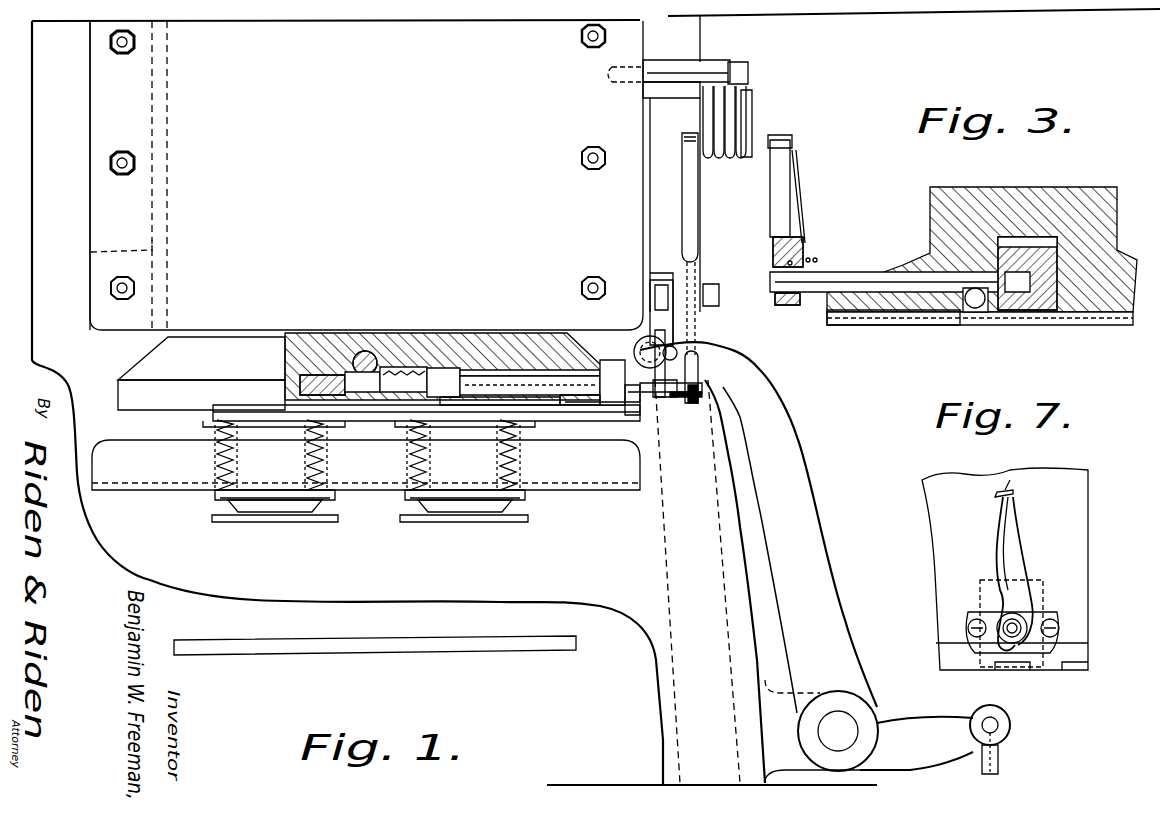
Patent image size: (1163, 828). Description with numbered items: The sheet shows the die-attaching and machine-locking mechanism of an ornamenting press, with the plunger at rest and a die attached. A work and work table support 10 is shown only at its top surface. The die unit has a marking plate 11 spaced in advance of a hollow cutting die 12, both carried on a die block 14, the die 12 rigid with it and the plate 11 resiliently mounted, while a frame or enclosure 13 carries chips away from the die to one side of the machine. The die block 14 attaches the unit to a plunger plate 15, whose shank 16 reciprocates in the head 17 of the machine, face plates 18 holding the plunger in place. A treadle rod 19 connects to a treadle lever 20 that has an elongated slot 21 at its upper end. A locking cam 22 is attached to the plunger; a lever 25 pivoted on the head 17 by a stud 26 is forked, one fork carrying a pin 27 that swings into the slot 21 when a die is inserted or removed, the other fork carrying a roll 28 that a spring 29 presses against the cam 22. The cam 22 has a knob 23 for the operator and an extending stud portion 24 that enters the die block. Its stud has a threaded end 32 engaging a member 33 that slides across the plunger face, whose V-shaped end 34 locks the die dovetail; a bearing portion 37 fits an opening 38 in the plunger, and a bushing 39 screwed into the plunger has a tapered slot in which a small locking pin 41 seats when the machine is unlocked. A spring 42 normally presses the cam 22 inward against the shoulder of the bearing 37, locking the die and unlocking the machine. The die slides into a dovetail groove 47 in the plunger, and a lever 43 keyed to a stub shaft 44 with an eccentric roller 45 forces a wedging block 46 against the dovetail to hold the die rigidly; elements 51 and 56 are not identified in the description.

In FIG. 1, the work and work table support 10 is at (448, 648).
In FIG. 1, the marking plate 11 is at (260, 523).
In FIG. 1, the cutting die 12 is at (228, 514).
In FIG. 1, the frame or enclosure 13 is at (183, 478).
In FIG. 1, the die block or base 14 is at (215, 416).
In FIG. 1, the plunger plate 15 is at (168, 362).
In FIG. 3, the plunger plate 15 is at (1095, 295).
In FIG. 7, the plunger plate 15 is at (1005, 569).
In FIG. 1, the shank 16 is at (98, 255).
In FIG. 1, the head 17 is at (50, 228).
In FIG. 1, the face plates 18 is at (95, 150).
In FIG. 1, the treadle rod 19 is at (1002, 752).
In FIG. 1, the treadle lever 20 is at (825, 578).
In FIG. 1, the elongated slot 21 is at (668, 352).
In FIG. 1, the locking lever or cam 22 is at (366, 176).
In FIG. 1, the knob or handle 23 is at (705, 401).
In FIG. 1, the extending stud portion 24 is at (642, 410).
In FIG. 1, the lever 25 is at (668, 243).
In FIG. 1, the stud 26 is at (752, 115).
In FIG. 1, the pin 27 is at (700, 375).
In FIG. 1, the roll 28 is at (705, 333).
In FIG. 1, the spring 29 is at (698, 193).
In FIG. 1, the threaded end 32 is at (392, 372).
In FIG. 1, the sliding member 33 is at (360, 350).
In FIG. 1, the V-shaped end 34 is at (386, 470).
In FIG. 1, the bearing portion 37 is at (435, 368).
In FIG. 1, the opening 38 is at (505, 376).
In FIG. 1, the bushing 39 is at (590, 405).
In FIG. 1, the locking pin 41 is at (612, 362).
In FIG. 1, the spring 42 is at (555, 405).
In FIG. 3, the lever 43 is at (785, 170).
In FIG. 7, the lever 43 is at (1000, 535).
In FIG. 3, the stub shaft 44 is at (862, 275).
In FIG. 7, the stub shaft 44 is at (1045, 650).
In FIG. 3, the eccentrically mounted roller 45 is at (1026, 300).
In FIG. 3, the cam or wedging block 46 is at (1037, 250).
In FIG. 7, the cam or wedging block 46 is at (982, 604).
In FIG. 1, the dovetail groove 47 is at (332, 428).
In FIG. 3, the dovetail groove 47 is at (908, 322).
In FIG. 7, the dovetail groove 47 is at (1010, 667).
In FIG. 1, the bar 51 is at (487, 370).
In FIG. 1, the spring 56 is at (347, 470).